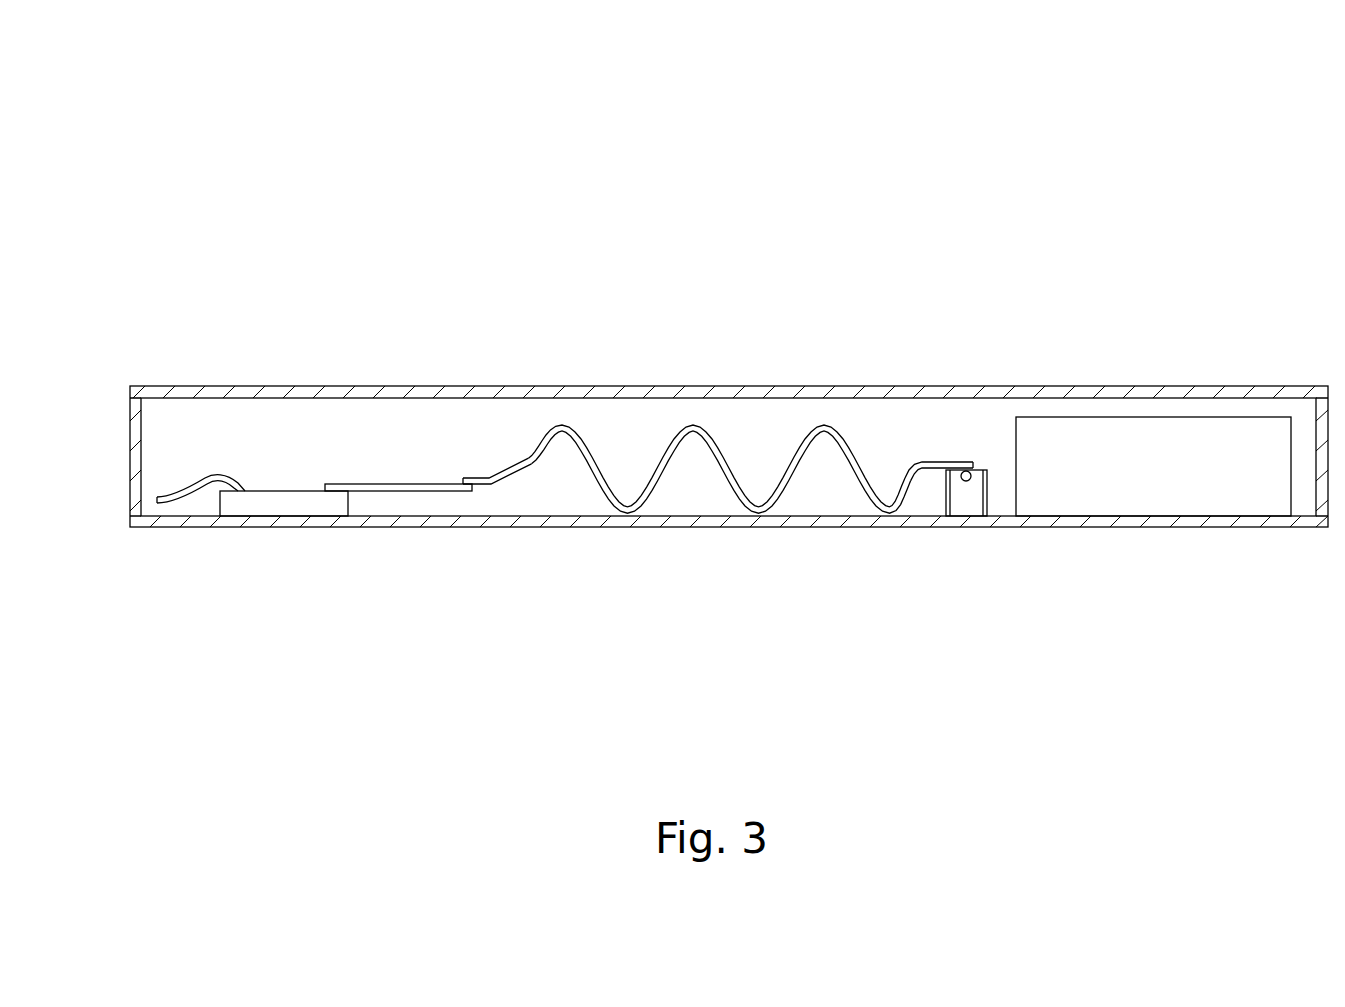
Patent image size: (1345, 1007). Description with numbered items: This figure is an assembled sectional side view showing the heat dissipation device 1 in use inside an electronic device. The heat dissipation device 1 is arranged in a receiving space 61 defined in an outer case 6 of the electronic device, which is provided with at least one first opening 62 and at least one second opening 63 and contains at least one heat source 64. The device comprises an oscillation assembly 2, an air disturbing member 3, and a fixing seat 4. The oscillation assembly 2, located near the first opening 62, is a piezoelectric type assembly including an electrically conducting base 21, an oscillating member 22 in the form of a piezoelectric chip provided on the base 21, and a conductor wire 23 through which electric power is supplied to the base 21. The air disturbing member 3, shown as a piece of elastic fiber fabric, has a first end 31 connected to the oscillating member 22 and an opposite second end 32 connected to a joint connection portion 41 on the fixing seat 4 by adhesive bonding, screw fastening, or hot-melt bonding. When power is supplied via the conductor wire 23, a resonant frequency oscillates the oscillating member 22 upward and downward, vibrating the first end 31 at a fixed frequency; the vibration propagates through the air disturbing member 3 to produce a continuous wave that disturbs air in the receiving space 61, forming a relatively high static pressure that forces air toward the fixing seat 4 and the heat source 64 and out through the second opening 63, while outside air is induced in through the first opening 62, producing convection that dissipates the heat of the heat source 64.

The heat dissipation device 1 is at (999, 409).
The oscillation assembly 2 is at (379, 340).
The base 21 is at (308, 500).
The oscillating member 22 is at (413, 486).
The conductor wire 23 is at (237, 474).
The air disturbing member 3 is at (676, 428).
The first end 31 is at (483, 478).
The second end 32 is at (918, 464).
The fixing seat 4 is at (970, 518).
The joint connection portion 41 is at (965, 471).
The outer case 6 is at (729, 454).
The receiving space 61 is at (212, 430).
The first opening 62 is at (143, 407).
The second opening 63 is at (1322, 415).
The heat source 64 is at (1141, 482).